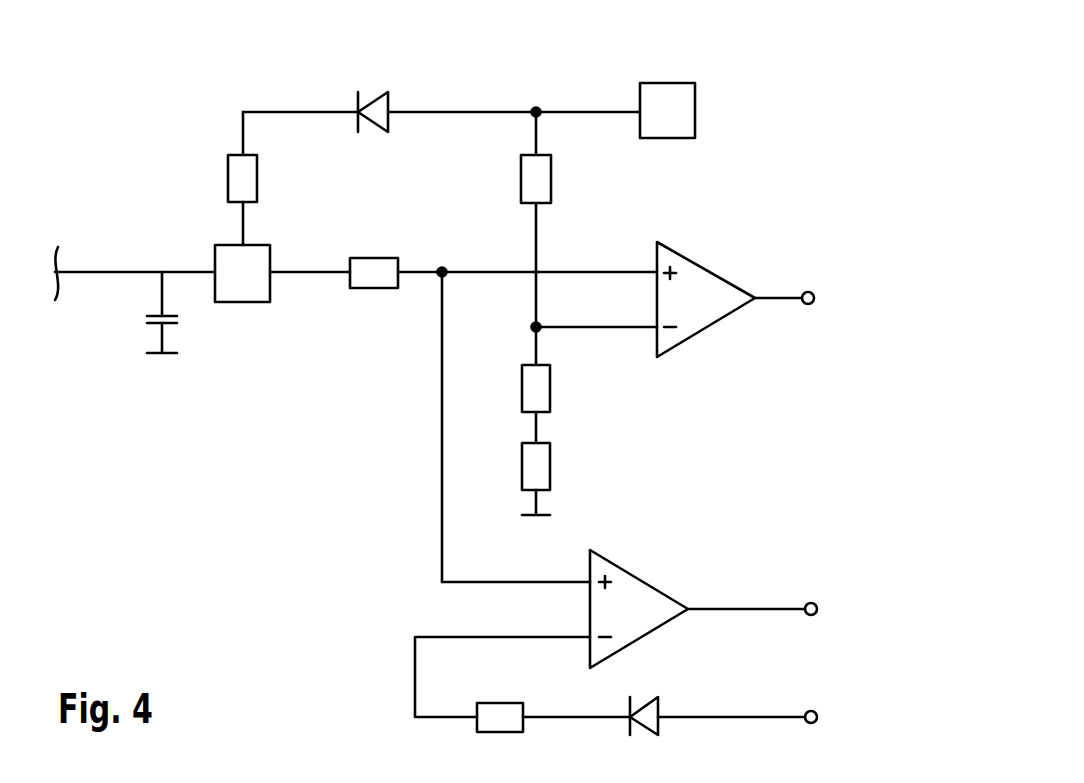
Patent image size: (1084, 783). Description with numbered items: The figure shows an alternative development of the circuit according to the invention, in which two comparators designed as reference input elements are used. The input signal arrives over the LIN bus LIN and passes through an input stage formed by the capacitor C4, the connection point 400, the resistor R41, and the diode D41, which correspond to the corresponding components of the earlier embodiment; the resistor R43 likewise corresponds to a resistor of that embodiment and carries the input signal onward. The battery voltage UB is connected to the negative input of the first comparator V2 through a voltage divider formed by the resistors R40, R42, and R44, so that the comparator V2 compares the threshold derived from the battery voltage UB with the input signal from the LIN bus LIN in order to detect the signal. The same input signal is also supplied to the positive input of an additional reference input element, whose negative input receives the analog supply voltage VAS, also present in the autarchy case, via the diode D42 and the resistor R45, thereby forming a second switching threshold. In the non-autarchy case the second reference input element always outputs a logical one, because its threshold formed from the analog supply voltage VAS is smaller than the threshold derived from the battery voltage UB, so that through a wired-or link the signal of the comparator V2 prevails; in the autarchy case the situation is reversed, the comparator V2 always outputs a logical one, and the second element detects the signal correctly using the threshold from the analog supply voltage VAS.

The LIN bus LIN is at (102, 270).
The capacitor C4 is at (150, 322).
The connection point 400 is at (244, 292).
The resistor R41 is at (228, 177).
The diode D41 is at (371, 124).
The battery voltage UB is at (695, 112).
The resistor R40 is at (521, 176).
The resistor R43 is at (372, 258).
The resistor R42 is at (550, 388).
The resistor R44 is at (550, 465).
The comparator V2 is at (700, 263).
The resistor R45 is at (503, 703).
The diode D42 is at (660, 705).
The analog supply voltage VAS is at (808, 711).